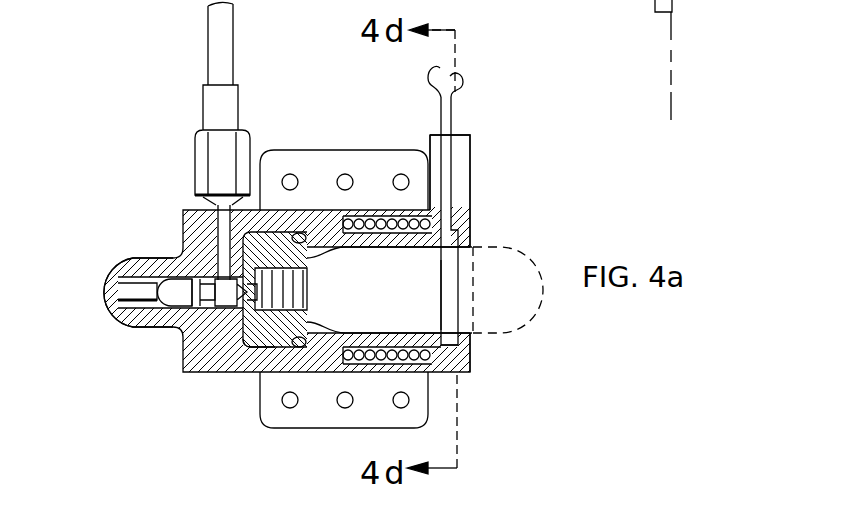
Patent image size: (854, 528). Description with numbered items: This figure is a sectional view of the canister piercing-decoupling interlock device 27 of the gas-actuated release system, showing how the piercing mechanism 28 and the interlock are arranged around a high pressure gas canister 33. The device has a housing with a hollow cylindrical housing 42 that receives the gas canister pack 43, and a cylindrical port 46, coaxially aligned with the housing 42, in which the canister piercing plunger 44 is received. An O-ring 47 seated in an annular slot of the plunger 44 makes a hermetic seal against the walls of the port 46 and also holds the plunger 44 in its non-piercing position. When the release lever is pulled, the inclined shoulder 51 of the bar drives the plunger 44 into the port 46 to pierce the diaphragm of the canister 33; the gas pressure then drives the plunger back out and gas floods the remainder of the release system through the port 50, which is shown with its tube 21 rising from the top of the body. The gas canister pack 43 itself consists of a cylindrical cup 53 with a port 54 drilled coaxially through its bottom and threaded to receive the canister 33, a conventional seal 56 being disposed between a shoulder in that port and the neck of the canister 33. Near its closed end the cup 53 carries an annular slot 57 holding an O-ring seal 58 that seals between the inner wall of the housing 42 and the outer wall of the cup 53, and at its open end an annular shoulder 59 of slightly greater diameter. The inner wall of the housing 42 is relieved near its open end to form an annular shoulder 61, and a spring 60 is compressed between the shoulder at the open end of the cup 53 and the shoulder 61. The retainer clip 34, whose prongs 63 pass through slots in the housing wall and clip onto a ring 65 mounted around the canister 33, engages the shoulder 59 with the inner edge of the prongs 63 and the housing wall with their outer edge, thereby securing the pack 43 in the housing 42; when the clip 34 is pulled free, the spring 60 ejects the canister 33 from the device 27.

The supply tube 21 is at (229, 60).
The canister piercing-decoupling interlock device 27 is at (330, 140).
The piercing mechanism 28 is at (132, 262).
The gas canister 33 is at (527, 259).
The retainer clip 34 is at (450, 124).
The hollow cylindrical housing 42 is at (242, 344).
The gas canister pack 43 is at (500, 210).
The canister piercing plunger 44 is at (168, 285).
The cylindrical port 46 is at (217, 305).
The O-ring 47 is at (187, 327).
The port 50 is at (218, 218).
The inclined shoulder 51 is at (148, 292).
The cylindrical cup 53 is at (322, 228).
The port 54 is at (263, 350).
The seal 56 is at (310, 281).
The annular slot 57 is at (298, 313).
The O-ring seal 58 is at (300, 350).
The annular shoulder 59 is at (433, 354).
The spring 60 is at (436, 215).
The annular shoulder 61 is at (347, 362).
The prongs 63 is at (445, 295).
The ring 65 is at (450, 333).